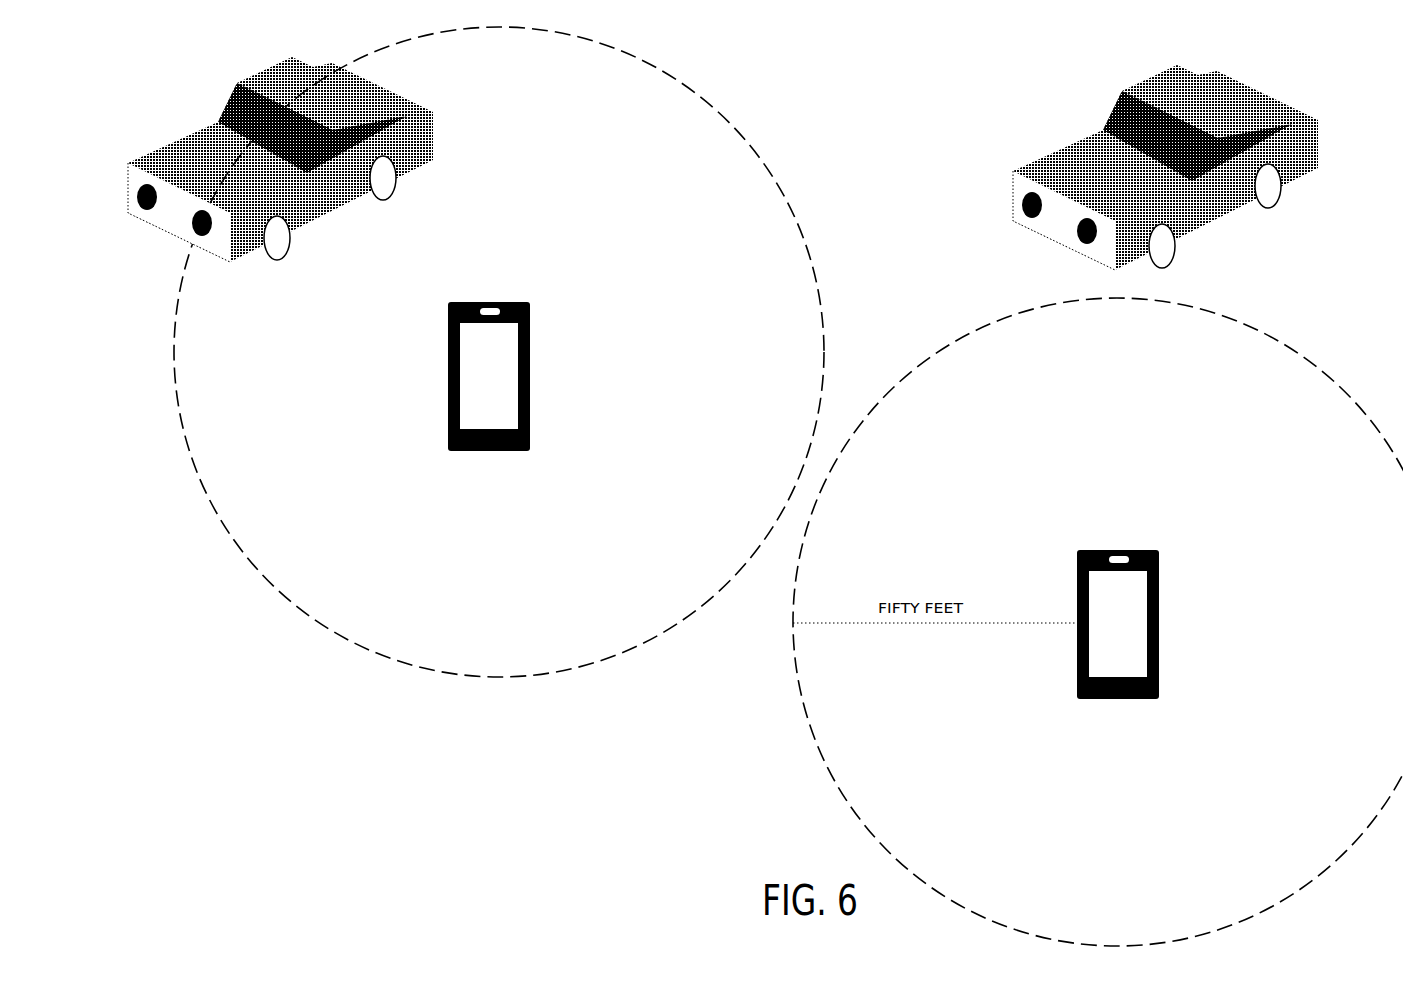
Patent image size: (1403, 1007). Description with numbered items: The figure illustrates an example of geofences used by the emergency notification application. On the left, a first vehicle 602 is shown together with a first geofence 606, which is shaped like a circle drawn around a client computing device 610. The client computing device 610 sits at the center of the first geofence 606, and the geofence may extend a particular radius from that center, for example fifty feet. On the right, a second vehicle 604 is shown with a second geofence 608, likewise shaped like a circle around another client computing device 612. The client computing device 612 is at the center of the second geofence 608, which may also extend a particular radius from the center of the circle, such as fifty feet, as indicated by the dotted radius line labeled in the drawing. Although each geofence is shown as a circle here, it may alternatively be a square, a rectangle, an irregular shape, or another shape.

The first vehicle 602 is at (397, 117).
The second vehicle 604 is at (1267, 102).
The first geofence 606 is at (757, 162).
The second geofence 608 is at (1273, 338).
The client computing device 610 is at (523, 300).
The client computing device 612 is at (1157, 552).